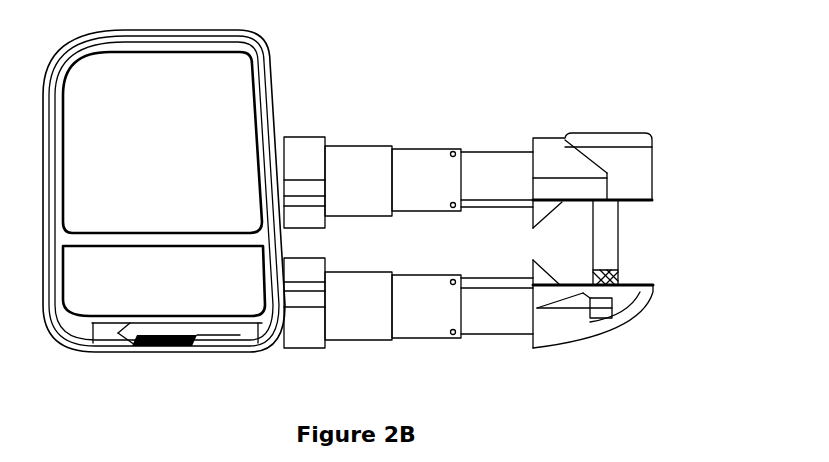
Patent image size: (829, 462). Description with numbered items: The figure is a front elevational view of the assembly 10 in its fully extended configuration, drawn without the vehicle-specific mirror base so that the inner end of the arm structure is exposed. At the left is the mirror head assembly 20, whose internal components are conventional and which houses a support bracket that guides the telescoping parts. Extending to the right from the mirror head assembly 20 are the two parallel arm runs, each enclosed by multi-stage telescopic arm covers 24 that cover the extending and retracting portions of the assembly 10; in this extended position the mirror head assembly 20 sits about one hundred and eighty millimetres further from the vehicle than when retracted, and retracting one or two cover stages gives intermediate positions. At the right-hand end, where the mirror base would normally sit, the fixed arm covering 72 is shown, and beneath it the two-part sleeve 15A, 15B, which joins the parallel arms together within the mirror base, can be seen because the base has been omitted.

The assembly 10 is at (508, 70).
The mirror head assembly 20 is at (287, 92).
The multi-stage telescopic arm covers 24 is at (413, 150).
The fixed arm covering 72 is at (623, 148).
The sleeve 15A is at (607, 228).
The sleeve 15B is at (624, 283).